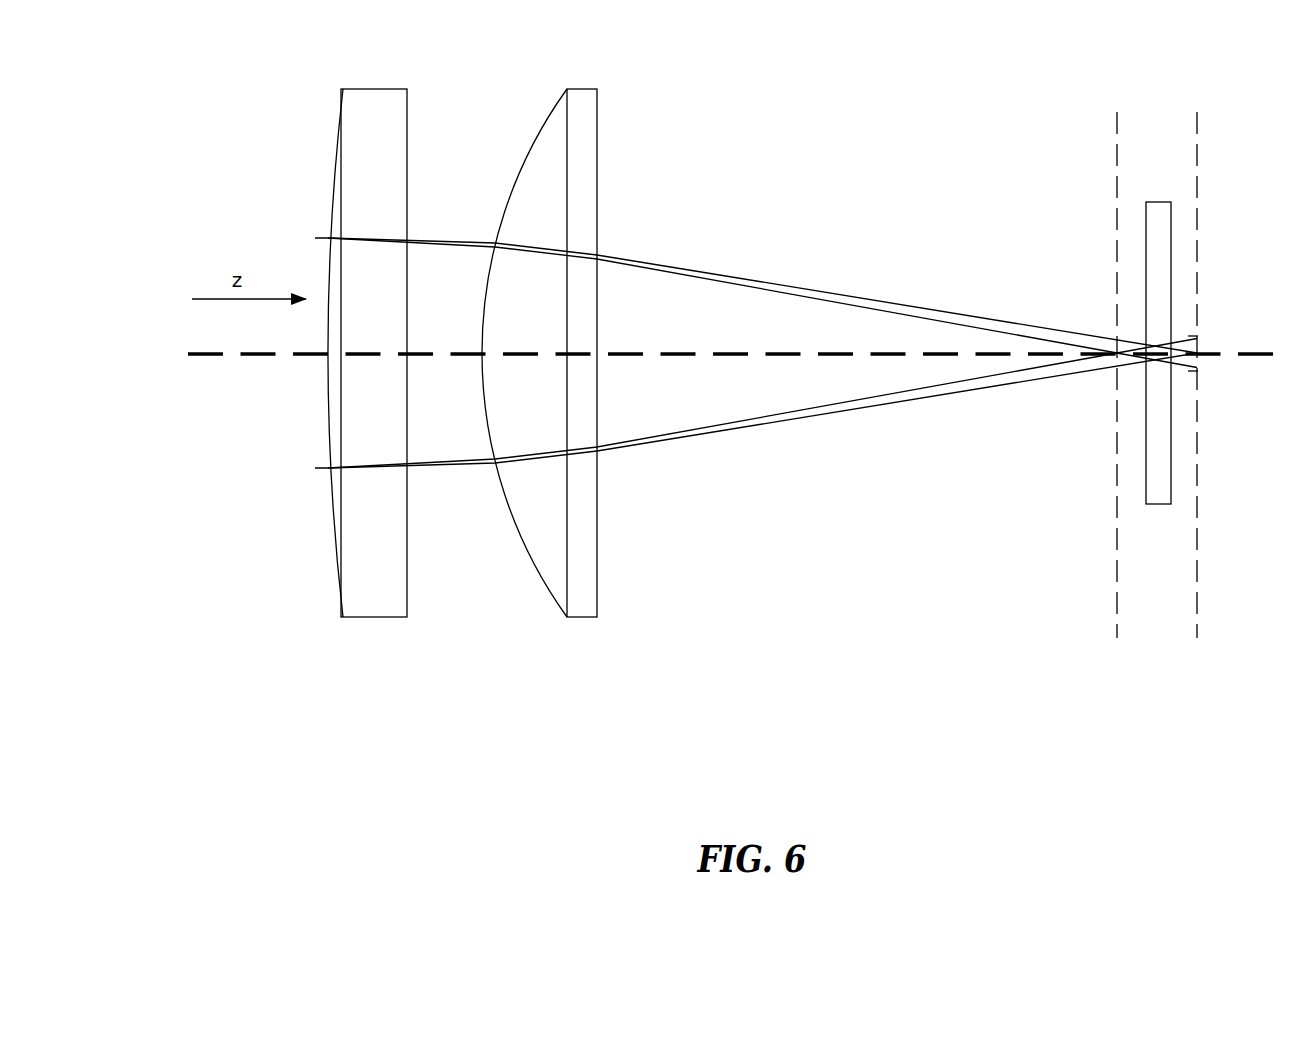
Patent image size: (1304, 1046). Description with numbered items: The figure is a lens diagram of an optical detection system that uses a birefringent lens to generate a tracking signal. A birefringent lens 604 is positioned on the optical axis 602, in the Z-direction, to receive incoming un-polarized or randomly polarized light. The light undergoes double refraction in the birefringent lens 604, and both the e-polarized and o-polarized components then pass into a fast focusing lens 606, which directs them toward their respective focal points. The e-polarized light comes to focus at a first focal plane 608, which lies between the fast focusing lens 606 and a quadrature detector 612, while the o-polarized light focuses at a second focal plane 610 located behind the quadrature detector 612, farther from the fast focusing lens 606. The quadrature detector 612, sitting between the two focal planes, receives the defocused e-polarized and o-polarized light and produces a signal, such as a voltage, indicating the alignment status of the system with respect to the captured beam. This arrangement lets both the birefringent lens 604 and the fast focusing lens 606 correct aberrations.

The optical axis 602 is at (255, 362).
The birefringent lens 604 is at (373, 628).
The fast focusing lens 606 is at (590, 628).
The first focal plane 608 is at (1100, 576).
The second focal plane 610 is at (1207, 626).
The quadrature detector 612 is at (1153, 182).